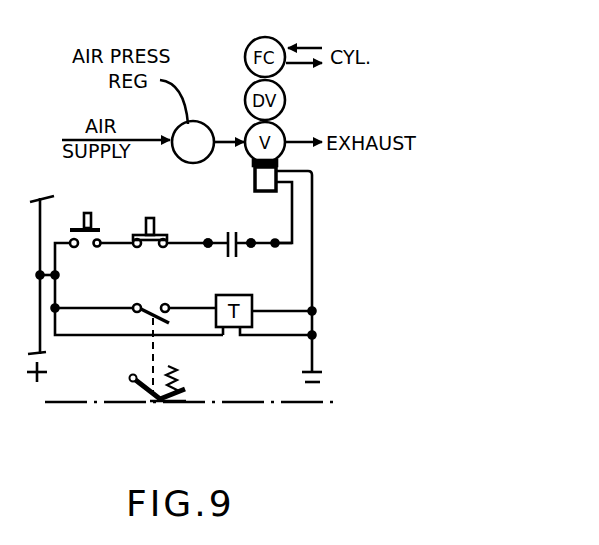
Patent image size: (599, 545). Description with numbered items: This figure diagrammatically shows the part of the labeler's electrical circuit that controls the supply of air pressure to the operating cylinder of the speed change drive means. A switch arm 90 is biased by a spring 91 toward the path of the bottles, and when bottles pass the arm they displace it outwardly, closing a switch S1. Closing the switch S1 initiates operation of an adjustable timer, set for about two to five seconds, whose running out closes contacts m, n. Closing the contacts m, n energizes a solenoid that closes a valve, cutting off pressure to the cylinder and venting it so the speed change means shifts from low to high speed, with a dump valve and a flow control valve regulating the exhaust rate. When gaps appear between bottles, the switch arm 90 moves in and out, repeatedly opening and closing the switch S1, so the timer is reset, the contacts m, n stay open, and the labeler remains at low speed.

The switch arm 90 is at (152, 400).
The spring 91 is at (178, 380).
The switch S1 is at (152, 305).
The contact m is at (208, 241).
The contact n is at (252, 241).